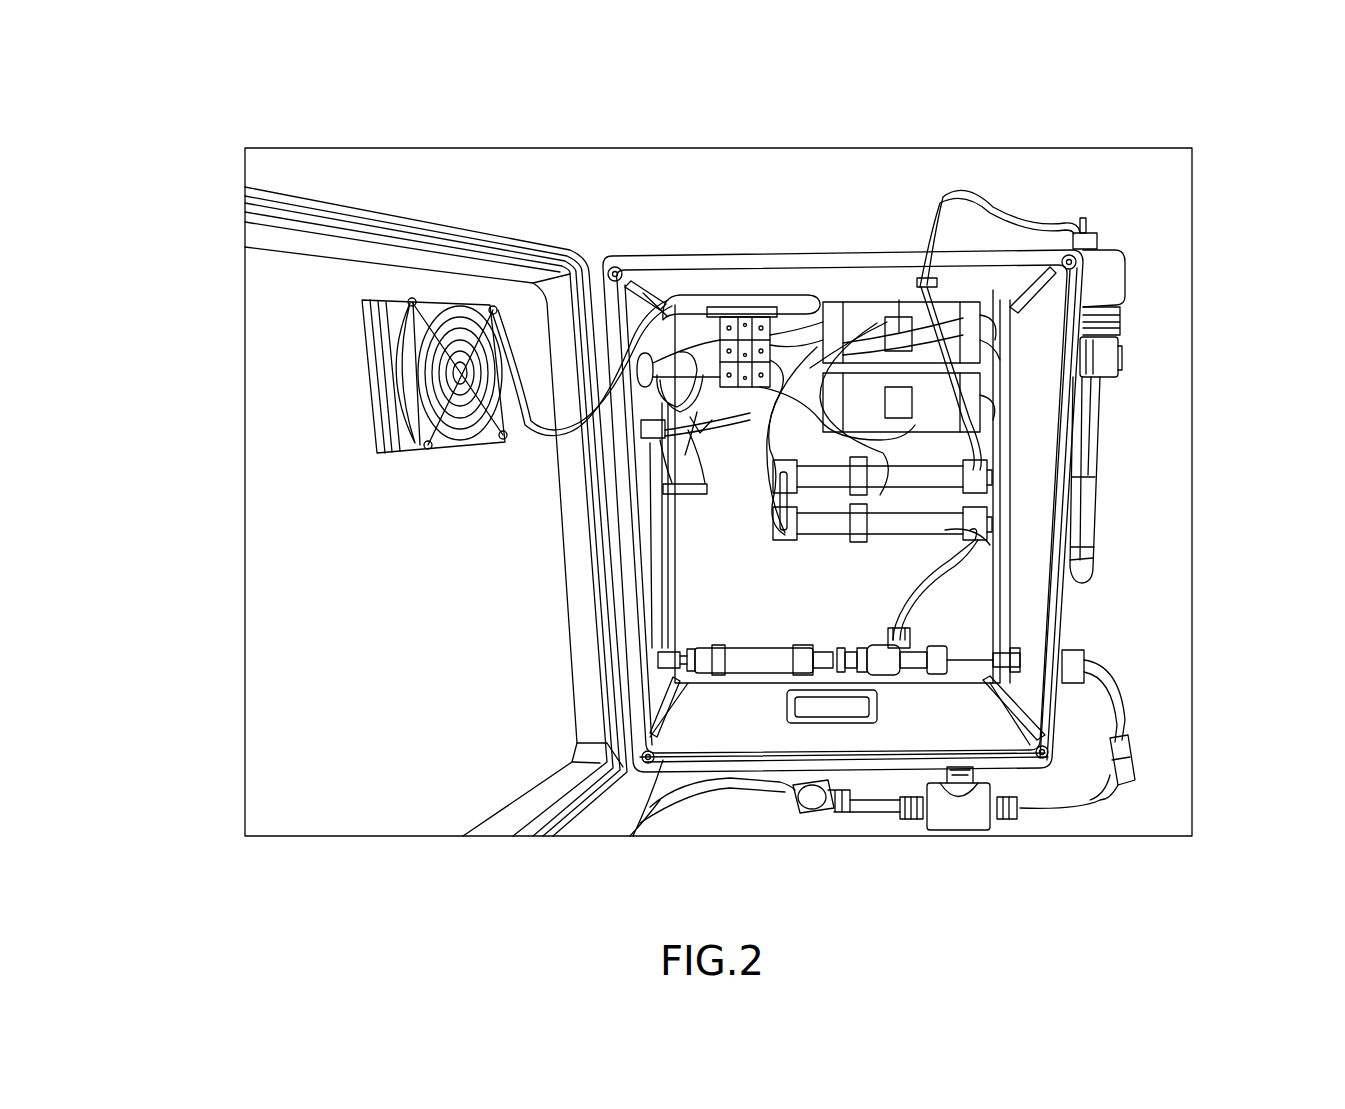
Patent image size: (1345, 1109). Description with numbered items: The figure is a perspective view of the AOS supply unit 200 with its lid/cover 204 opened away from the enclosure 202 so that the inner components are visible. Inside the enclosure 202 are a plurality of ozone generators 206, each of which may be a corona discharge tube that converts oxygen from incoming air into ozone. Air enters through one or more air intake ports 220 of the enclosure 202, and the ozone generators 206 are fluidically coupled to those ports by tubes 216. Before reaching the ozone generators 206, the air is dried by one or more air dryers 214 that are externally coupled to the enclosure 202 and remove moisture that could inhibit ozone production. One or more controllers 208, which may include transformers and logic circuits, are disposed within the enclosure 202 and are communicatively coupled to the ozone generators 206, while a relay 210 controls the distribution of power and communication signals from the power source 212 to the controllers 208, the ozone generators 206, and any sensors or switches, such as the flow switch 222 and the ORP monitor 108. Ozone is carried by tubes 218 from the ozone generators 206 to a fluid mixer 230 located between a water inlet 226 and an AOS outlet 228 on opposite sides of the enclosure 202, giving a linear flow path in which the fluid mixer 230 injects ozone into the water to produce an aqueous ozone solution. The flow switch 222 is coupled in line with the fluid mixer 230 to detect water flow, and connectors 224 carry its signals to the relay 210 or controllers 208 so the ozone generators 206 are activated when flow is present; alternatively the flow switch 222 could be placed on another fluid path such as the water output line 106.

The AOS supply unit 200 is at (215, 110).
The enclosure 202 is at (733, 300).
The lid/cover 204 is at (438, 222).
The ozone generators 206 is at (950, 522).
The controllers 208 is at (899, 332).
The relay 210 is at (727, 297).
The power source 212 is at (757, 300).
The air dryers 214 is at (1088, 443).
The tubes 216 is at (1105, 325).
The tubes 218 is at (923, 577).
The air intake ports 220 is at (927, 283).
The flow switch 222 is at (760, 660).
The connectors 224 is at (653, 580).
The water inlet 226 is at (638, 838).
The AOS outlet 228 is at (895, 655).
The fluid mixer 230 is at (912, 640).
The water output line 106 is at (1122, 700).
The ORP monitor 108 is at (965, 826).